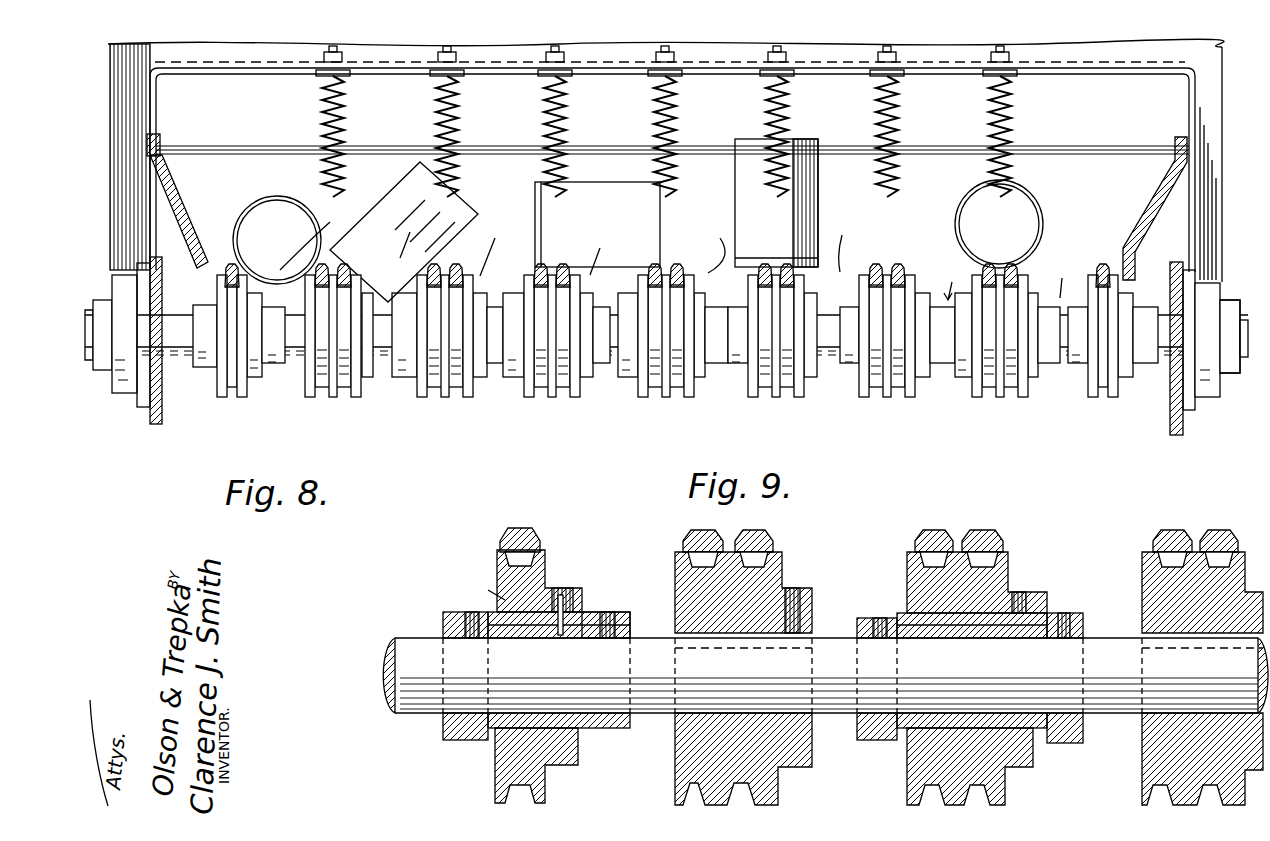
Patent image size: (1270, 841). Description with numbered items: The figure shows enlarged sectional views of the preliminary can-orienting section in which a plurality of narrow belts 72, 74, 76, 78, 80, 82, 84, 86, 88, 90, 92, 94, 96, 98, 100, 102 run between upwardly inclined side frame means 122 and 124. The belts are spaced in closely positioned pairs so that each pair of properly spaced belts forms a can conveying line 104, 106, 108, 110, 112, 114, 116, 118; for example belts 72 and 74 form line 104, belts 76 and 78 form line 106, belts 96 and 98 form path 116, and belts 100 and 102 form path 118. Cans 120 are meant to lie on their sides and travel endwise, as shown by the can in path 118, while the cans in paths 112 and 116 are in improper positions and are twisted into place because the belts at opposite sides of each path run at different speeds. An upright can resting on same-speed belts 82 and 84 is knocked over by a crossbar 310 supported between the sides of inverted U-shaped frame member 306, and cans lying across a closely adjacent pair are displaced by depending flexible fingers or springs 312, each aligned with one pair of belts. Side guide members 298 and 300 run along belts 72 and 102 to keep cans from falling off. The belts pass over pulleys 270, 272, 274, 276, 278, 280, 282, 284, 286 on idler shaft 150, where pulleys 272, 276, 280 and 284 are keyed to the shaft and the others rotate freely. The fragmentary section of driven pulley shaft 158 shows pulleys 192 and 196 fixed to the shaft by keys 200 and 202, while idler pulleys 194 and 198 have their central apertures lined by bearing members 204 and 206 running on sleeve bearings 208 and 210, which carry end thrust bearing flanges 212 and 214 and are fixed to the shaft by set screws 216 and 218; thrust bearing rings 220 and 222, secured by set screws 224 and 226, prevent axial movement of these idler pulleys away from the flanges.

In FIG. 8, the narrow belt 72 is at (1110, 268).
In FIG. 8, the narrow belt 74 is at (1018, 268).
In FIG. 8, the narrow belt 76 is at (985, 268).
In FIG. 8, the narrow belt 78 is at (902, 266).
In FIG. 8, the narrow belt 80 is at (875, 266).
In FIG. 8, the narrow belt 82 is at (789, 266).
In FIG. 8, the narrow belt 84 is at (764, 266).
In FIG. 8, the narrow belt 86 is at (680, 266).
In FIG. 8, the narrow belt 88 is at (652, 266).
In FIG. 8, the narrow belt 90 is at (564, 266).
In FIG. 9, the narrow belt 90 is at (1219, 530).
In FIG. 8, the narrow belt 92 is at (537, 268).
In FIG. 9, the narrow belt 92 is at (1170, 530).
In FIG. 8, the narrow belt 94 is at (458, 266).
In FIG. 9, the narrow belt 94 is at (988, 530).
In FIG. 8, the narrow belt 96 is at (433, 266).
In FIG. 9, the narrow belt 96 is at (932, 530).
In FIG. 8, the narrow belt 98 is at (347, 266).
In FIG. 9, the narrow belt 98 is at (758, 530).
In FIG. 8, the narrow belt 100 is at (318, 282).
In FIG. 9, the narrow belt 100 is at (688, 538).
In FIG. 8, the narrow belt 102 is at (236, 266).
In FIG. 9, the narrow belt 102 is at (517, 528).
In FIG. 8, the can conveying line 104 is at (1068, 278).
In FIG. 8, the can conveying line 106 is at (953, 281).
In FIG. 8, the can conveying line 108 is at (851, 244).
In FIG. 8, the can conveying line 110 is at (718, 245).
In FIG. 8, the can conveying line 112 is at (604, 251).
In FIG. 8, the can conveying line 114 is at (498, 247).
In FIG. 8, the can conveying line 116 is at (417, 235).
In FIG. 8, the can conveying line 118 is at (316, 237).
In FIG. 8, the can 120 is at (277, 196).
In FIG. 8, the side frame means 122 is at (1182, 428).
In FIG. 8, the side frame means 124 is at (160, 410).
In FIG. 8, the idler shaft 150 is at (1245, 320).
In FIG. 9, the pulley shaft 158 is at (402, 650).
In FIG. 9, the pulley 192 is at (1150, 583).
In FIG. 9, the pulley 194 is at (1010, 585).
In FIG. 9, the pulley 196 is at (786, 590).
In FIG. 9, the pulley 198 is at (479, 589).
In FIG. 9, the key 200 is at (1150, 650).
In FIG. 9, the key 202 is at (755, 646).
In FIG. 9, the bearing member 204 is at (1000, 605).
In FIG. 9, the bearing member 206 is at (535, 580).
In FIG. 9, the sleeve bearing 208 is at (1028, 770).
In FIG. 9, the sleeve bearing 210 is at (530, 640).
In FIG. 9, the end thrust bearing flange 212 is at (1075, 745).
In FIG. 9, the end thrust bearing flange 214 is at (605, 740).
In FIG. 9, the set screw 216 is at (1065, 614).
In FIG. 9, the set screw 218 is at (604, 613).
In FIG. 9, the thrust bearing ring 220 is at (878, 740).
In FIG. 9, the thrust bearing ring 222 is at (468, 740).
In FIG. 9, the set screw 224 is at (872, 618).
In FIG. 9, the set screw 226 is at (470, 612).
In FIG. 8, the pulley 270 is at (1113, 392).
In FIG. 8, the pulley 272 is at (1021, 392).
In FIG. 8, the pulley 274 is at (908, 392).
In FIG. 8, the pulley 276 is at (798, 392).
In FIG. 8, the pulley 278 is at (688, 392).
In FIG. 8, the pulley 280 is at (574, 392).
In FIG. 8, the pulley 282 is at (466, 392).
In FIG. 8, the pulley 284 is at (355, 392).
In FIG. 8, the pulley 286 is at (245, 392).
In FIG. 8, the side guide member 298 is at (1152, 205).
In FIG. 8, the side guide member 300 is at (178, 188).
In FIG. 8, the inverted U-shaped frame member 306 is at (935, 74).
In FIG. 8, the crossbar 310 is at (720, 155).
In FIG. 8, the flexible fingers or springs 312 is at (768, 122).